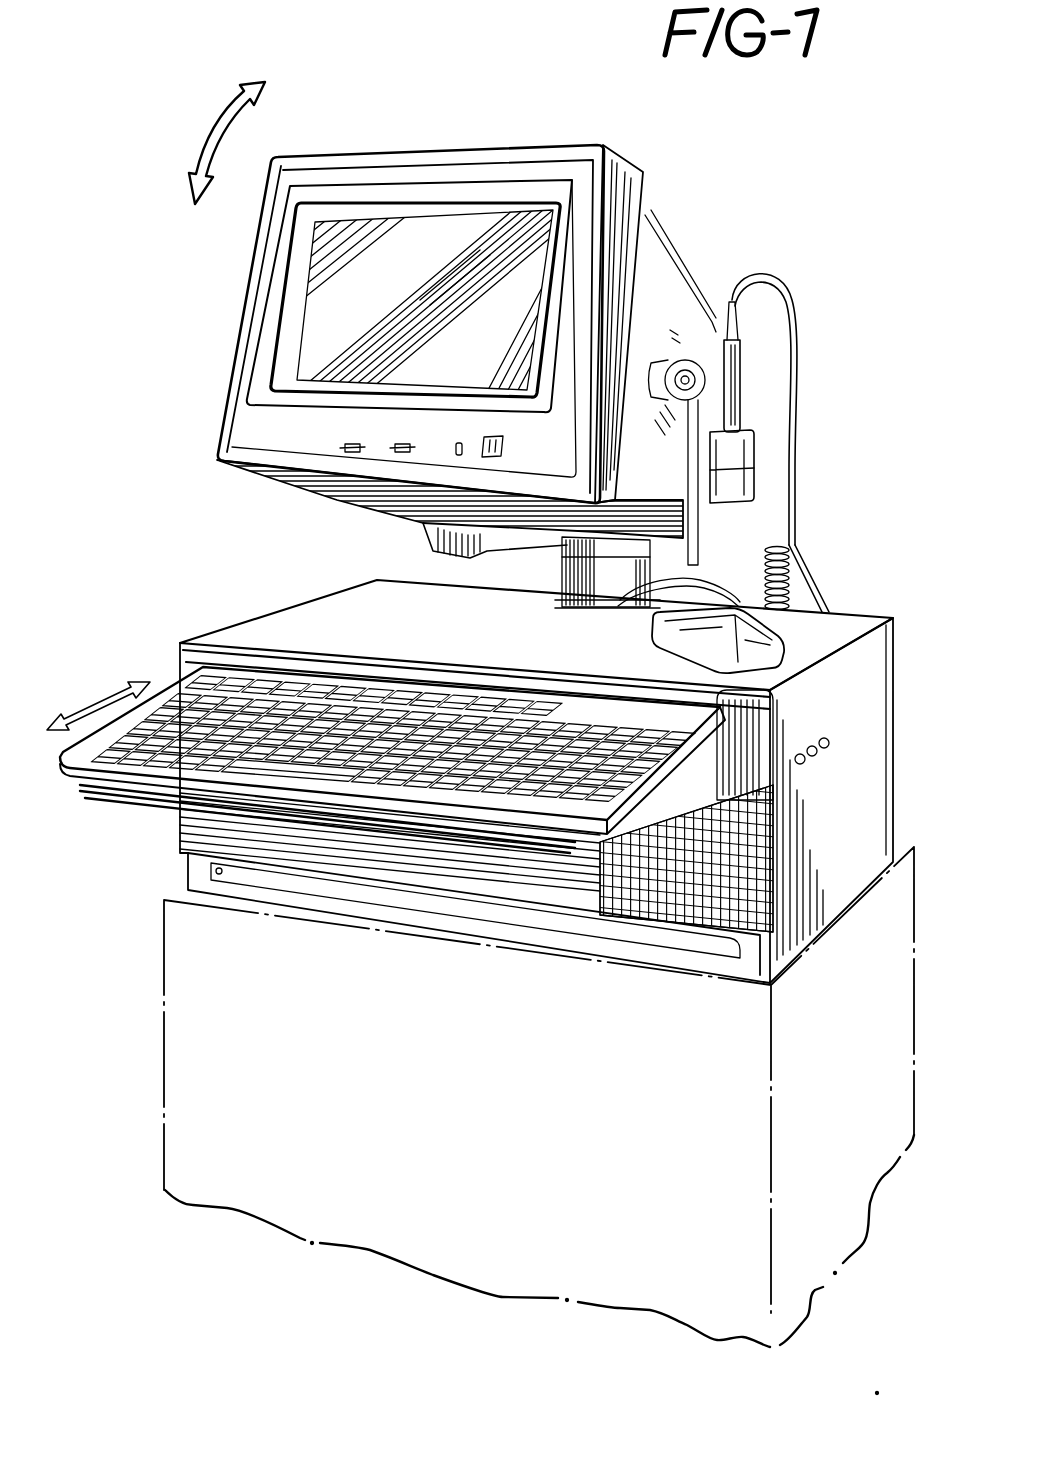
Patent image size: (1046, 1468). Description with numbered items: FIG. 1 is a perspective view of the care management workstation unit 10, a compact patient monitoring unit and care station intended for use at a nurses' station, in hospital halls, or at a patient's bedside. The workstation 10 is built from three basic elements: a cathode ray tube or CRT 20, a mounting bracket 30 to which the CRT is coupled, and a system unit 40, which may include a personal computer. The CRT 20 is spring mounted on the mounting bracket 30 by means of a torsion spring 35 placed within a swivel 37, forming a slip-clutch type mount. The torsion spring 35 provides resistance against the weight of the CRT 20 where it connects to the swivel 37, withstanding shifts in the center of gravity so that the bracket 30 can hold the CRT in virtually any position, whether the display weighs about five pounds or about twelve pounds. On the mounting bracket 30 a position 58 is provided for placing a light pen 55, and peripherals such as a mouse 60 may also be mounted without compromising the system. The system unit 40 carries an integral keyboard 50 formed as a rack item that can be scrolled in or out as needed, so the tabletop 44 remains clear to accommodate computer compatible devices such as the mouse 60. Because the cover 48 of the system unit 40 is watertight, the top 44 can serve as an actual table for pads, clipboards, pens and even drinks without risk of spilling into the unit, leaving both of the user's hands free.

The care management workstation unit 10 is at (160, 549).
The cathode ray tube (CRT) 20 is at (253, 308).
The mounting bracket 30 is at (437, 542).
The torsion spring 35 is at (690, 357).
The swivel 37 is at (700, 317).
The system unit 40 is at (839, 855).
The tabletop 44 is at (293, 618).
The cover 48 is at (642, 909).
The integral keyboard 50 is at (170, 697).
The light pen 55 is at (740, 377).
The position for light pen 58 is at (742, 462).
The mouse 60 is at (837, 613).